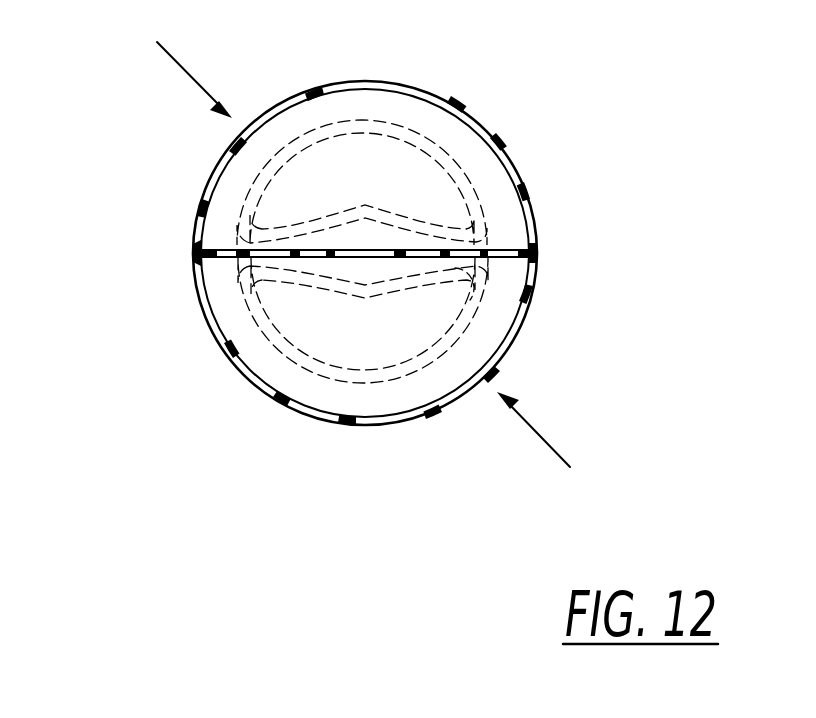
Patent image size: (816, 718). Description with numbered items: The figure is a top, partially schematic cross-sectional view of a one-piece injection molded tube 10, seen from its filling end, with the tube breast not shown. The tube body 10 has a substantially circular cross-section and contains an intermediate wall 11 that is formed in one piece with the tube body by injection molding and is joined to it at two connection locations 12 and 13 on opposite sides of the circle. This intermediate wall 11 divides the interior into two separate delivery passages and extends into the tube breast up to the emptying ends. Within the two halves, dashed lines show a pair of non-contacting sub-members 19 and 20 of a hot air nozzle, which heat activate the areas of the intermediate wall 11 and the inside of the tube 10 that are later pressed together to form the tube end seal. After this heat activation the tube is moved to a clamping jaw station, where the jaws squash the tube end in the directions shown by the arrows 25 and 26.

The tube 10 is at (497, 140).
The intermediate wall 11 is at (430, 258).
The connection location 12 is at (537, 250).
The connection location 13 is at (192, 252).
The sub-member of hot air nozzle 19 is at (380, 145).
The sub-member of hot air nozzle 20 is at (360, 362).
The arrow 25 is at (181, 66).
The arrow 26 is at (550, 446).